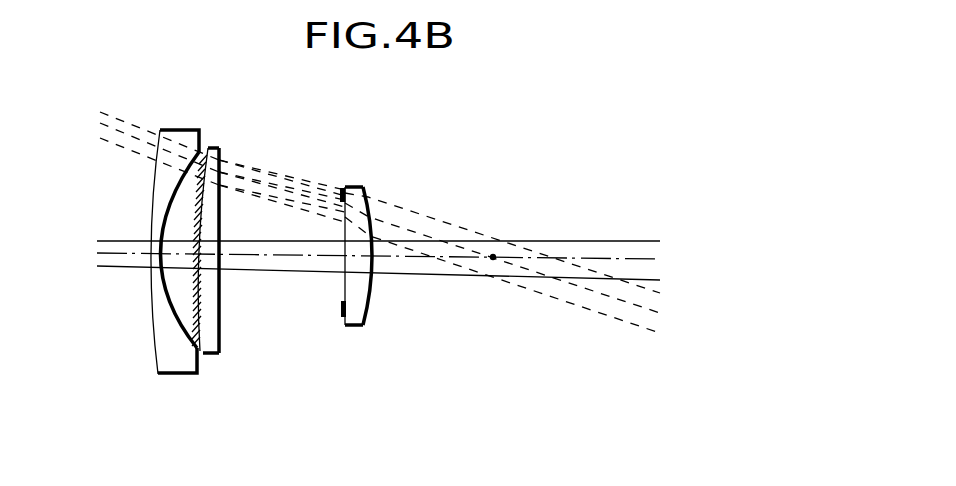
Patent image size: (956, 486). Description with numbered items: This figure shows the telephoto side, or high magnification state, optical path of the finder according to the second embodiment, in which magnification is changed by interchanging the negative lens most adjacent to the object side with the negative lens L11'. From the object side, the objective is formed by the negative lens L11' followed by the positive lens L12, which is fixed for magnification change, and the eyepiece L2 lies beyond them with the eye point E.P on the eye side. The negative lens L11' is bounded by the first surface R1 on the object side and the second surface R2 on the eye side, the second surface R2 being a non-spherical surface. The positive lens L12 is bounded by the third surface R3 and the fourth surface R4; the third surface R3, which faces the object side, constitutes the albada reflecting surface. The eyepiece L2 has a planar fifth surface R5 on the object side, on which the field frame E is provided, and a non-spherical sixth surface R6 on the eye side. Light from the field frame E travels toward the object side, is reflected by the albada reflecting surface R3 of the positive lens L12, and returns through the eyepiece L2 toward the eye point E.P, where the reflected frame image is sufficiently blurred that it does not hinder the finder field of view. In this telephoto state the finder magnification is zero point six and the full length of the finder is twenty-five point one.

The negative lens L11' is at (149, 255).
The positive lens L12 is at (240, 266).
The eyepiece L2 is at (351, 247).
The field frame E is at (343, 190).
The eye point E.P is at (493, 257).
The first surface R1 is at (157, 362).
The second surface R2 is at (190, 345).
The third surface R3 is at (200, 352).
The fourth surface R4 is at (220, 338).
The fifth surface R5 is at (343, 320).
The sixth surface R6 is at (367, 318).